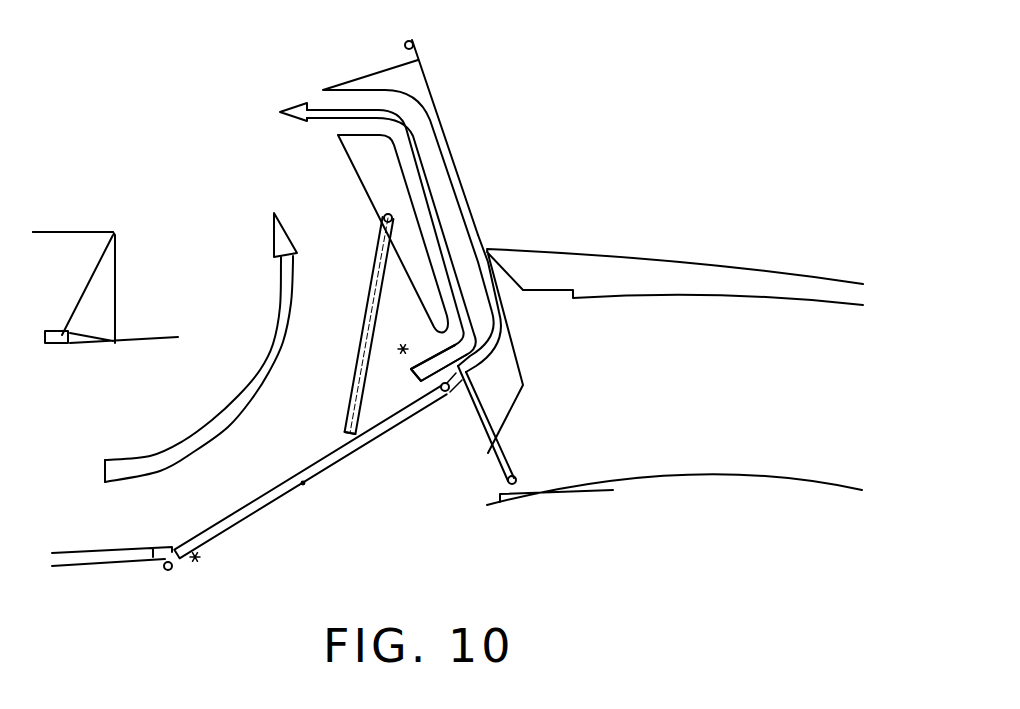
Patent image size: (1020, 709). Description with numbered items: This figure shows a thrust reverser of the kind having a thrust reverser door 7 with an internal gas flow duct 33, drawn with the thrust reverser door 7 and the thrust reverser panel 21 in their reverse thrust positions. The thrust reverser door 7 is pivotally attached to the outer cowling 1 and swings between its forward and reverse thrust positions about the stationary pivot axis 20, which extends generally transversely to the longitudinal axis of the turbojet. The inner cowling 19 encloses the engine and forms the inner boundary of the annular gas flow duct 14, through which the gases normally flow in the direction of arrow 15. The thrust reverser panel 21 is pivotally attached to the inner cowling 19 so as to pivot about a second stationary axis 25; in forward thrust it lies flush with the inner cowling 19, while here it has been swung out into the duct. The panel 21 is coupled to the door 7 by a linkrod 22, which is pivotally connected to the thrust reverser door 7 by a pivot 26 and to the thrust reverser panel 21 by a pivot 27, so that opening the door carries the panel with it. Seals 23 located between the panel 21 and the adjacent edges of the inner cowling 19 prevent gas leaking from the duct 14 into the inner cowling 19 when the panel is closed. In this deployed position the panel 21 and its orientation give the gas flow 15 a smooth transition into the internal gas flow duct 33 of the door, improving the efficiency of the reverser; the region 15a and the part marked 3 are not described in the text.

The outer cowling 1 is at (93, 288).
The annular gas flow duct 14 is at (73, 310).
The gas flow arrow 15 is at (186, 457).
The guide flange 15a is at (428, 362).
The body side panel 3 is at (610, 256).
The thrust reverser door 7 is at (408, 78).
The inner cowling 19 is at (658, 477).
The stationary pivot axis 20 is at (403, 350).
The thrust reverser panel 21 is at (303, 483).
The linkrod 22 is at (380, 273).
The seals 23 is at (465, 402).
The second stationary axis 25 is at (196, 559).
The pivot 26 is at (385, 220).
The pivot 27 is at (350, 435).
The internal gas flow duct 33 is at (448, 212).